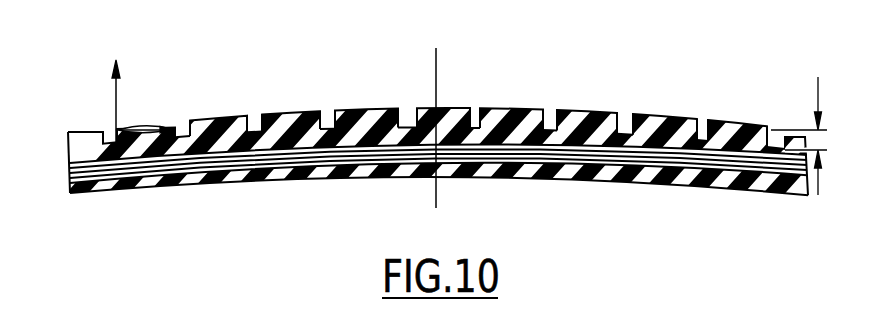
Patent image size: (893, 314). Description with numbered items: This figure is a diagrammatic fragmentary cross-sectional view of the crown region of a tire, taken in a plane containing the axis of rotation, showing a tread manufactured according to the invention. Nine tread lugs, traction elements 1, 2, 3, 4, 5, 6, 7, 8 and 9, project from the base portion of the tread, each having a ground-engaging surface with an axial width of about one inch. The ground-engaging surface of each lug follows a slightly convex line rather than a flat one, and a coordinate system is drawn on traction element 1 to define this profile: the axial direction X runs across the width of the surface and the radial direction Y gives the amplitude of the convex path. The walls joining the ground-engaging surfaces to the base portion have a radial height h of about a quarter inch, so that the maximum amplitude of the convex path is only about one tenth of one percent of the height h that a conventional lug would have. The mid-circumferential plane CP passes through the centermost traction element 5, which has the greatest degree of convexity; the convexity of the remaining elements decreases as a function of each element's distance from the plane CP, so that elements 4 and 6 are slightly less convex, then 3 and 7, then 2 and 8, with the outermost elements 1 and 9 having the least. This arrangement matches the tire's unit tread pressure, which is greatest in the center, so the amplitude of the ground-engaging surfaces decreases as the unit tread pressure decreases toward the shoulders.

The traction element 1 is at (152, 128).
The traction element 2 is at (222, 120).
The traction element 3 is at (288, 118).
The traction element 4 is at (372, 118).
The centermost traction element 5 is at (445, 118).
The traction element 6 is at (500, 117).
The traction element 7 is at (582, 120).
The traction element 8 is at (668, 123).
The traction element 9 is at (745, 130).
The x coordinate axis X is at (149, 127).
The y coordinate axis Y is at (117, 98).
The mid-circumferential plane CP is at (437, 73).
The radial height h is at (817, 100).